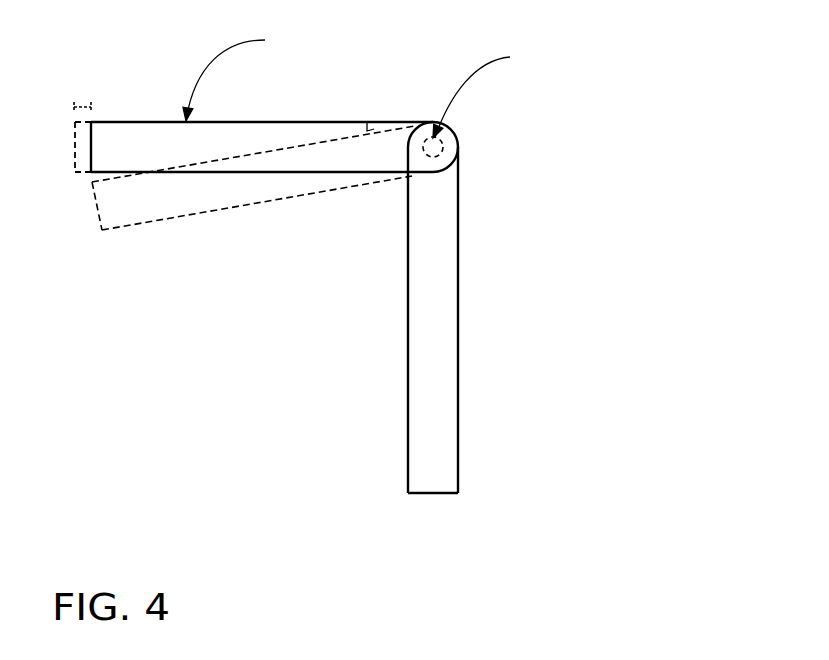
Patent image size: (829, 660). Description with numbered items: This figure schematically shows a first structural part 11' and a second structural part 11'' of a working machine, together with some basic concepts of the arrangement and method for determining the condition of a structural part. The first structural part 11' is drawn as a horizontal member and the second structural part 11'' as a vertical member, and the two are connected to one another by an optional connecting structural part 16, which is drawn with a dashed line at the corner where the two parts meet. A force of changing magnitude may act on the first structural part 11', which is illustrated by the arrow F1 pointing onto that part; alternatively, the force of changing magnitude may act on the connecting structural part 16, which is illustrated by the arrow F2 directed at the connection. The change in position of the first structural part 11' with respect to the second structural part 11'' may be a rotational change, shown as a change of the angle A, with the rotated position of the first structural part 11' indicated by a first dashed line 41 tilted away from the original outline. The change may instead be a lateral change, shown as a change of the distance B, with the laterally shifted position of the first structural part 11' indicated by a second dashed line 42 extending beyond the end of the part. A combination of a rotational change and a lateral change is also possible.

The first structural part 11' is at (274, 118).
The second structural part 11'' is at (397, 307).
The connecting structural part 16 is at (440, 147).
The first dashed line 41 is at (370, 183).
The second dashed line 42 is at (80, 173).
The distance B is at (82, 103).
The angle A is at (377, 122).
The force arrow F1 is at (246, 69).
The force arrow F2 is at (494, 87).